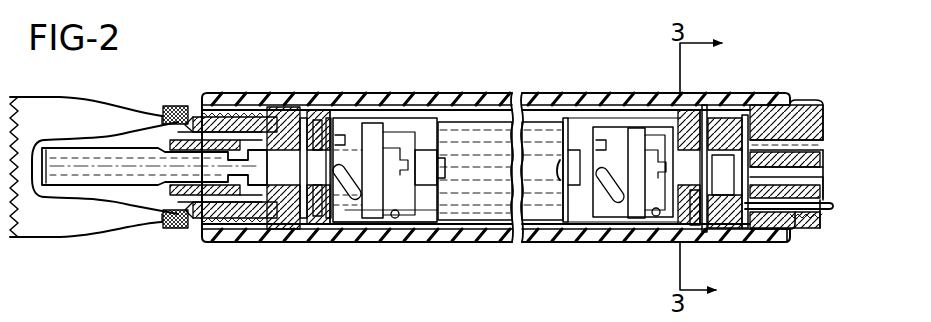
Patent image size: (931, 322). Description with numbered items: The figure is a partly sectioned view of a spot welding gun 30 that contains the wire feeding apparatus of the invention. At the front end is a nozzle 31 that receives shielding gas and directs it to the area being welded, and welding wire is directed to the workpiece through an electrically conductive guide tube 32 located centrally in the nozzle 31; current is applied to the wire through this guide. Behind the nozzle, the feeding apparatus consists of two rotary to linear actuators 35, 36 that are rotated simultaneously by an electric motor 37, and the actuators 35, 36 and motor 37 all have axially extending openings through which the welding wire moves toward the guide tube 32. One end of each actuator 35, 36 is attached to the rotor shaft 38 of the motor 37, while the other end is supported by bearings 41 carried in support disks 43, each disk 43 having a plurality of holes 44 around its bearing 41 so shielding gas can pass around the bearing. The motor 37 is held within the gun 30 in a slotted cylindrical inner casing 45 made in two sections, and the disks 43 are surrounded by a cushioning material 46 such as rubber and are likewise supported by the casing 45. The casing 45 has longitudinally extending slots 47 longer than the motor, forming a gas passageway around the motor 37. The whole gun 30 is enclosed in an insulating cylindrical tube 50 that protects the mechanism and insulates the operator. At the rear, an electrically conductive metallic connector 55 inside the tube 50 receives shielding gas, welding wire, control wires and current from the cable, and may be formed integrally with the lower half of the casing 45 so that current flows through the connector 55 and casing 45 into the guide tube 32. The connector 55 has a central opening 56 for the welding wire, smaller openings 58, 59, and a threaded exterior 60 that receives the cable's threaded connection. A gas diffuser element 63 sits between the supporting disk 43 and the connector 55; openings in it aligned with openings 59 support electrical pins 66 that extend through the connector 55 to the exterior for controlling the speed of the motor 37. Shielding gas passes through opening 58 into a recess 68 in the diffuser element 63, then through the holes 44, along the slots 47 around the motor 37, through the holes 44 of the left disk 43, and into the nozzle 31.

The spot welding gun 30 is at (356, 91).
The nozzle 31 is at (88, 117).
The guide tube 32 is at (82, 178).
The rotary to linear actuator 35 is at (370, 220).
The rotary to linear actuator 36 is at (636, 222).
The electric motor 37 is at (532, 218).
The rotor shaft 38 is at (434, 174).
The bearing 41 is at (317, 214).
The support disk 43 is at (329, 120).
The holes 44 is at (672, 130).
The inner casing 45 is at (369, 112).
The cushioning material 46 is at (306, 122).
The longitudinal slots 47 is at (466, 116).
The insulating cylindrical tube 50 is at (544, 106).
The connector 55 is at (817, 137).
The central opening 56 is at (812, 128).
The opening 58 is at (764, 132).
The opening 59 is at (765, 241).
The threaded exterior 60 is at (791, 128).
The gas diffuser element 63 is at (713, 132).
The electrical pins 66 is at (833, 212).
The recess 68 is at (749, 133).